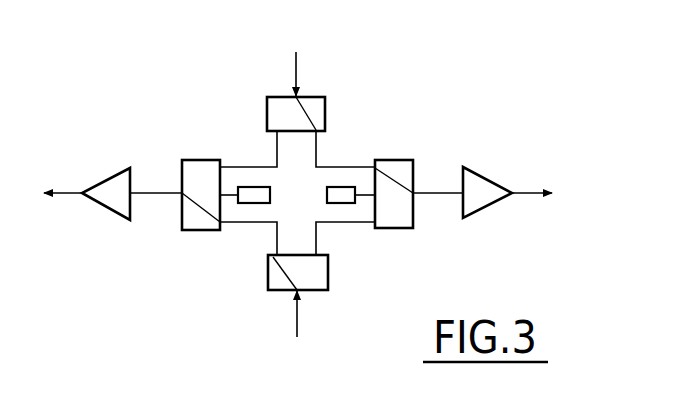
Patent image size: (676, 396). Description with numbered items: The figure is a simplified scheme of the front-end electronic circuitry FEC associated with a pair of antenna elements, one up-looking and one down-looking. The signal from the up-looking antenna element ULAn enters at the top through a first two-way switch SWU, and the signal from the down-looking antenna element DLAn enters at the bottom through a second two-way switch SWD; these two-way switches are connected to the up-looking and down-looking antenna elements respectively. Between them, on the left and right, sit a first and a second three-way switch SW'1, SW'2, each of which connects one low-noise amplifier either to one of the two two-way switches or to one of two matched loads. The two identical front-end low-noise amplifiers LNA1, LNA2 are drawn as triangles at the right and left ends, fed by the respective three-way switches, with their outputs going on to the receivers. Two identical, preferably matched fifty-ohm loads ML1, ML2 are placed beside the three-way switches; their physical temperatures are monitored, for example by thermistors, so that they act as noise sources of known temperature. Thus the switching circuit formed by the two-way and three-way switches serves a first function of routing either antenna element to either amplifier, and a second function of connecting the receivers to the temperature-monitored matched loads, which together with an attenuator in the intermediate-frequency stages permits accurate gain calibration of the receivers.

The front-end circuitry FEC is at (422, 69).
The first two-way switch SWU is at (267, 113).
The second two-way switch SWD is at (268, 272).
The first three-way switch SW'1 is at (409, 168).
The second three-way switch SW'2 is at (171, 169).
The matched load ML1 is at (340, 203).
The matched load ML2 is at (250, 203).
The low-noise amplifier LNA1 is at (482, 208).
The low-noise amplifier LNA2 is at (108, 212).
The up-looking antenna element signal ULAn is at (306, 59).
The down-looking antenna element signal DLAn is at (313, 325).